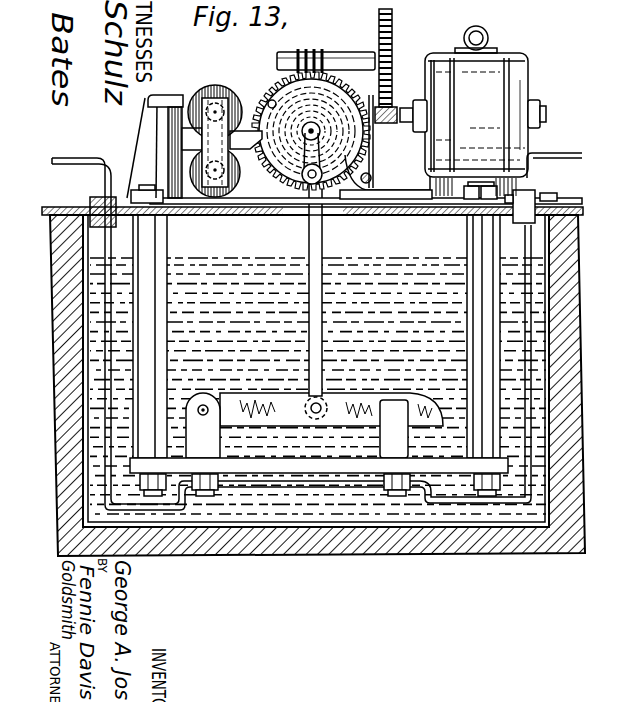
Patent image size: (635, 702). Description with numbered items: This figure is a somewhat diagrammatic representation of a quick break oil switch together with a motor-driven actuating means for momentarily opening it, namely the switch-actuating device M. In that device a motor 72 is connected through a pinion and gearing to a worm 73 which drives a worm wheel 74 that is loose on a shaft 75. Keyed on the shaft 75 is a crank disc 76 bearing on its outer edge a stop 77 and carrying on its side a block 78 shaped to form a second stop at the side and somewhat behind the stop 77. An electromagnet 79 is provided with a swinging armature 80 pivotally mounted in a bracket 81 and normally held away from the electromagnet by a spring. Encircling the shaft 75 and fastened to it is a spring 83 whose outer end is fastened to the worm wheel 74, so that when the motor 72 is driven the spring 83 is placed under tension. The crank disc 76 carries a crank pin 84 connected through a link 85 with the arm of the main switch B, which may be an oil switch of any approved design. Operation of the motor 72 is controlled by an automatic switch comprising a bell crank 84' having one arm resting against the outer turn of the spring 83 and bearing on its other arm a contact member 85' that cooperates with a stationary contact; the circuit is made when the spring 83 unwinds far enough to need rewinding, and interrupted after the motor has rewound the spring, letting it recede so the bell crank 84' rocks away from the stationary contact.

The motor 72 is at (492, 84).
The worm 73 is at (301, 53).
The worm wheel 74 is at (267, 100).
The shaft 75 is at (284, 178).
The crank disc 76 is at (314, 134).
The stop 77 is at (268, 103).
The block 78 is at (285, 112).
The electromagnet 79 is at (214, 86).
The swinging armature 80 is at (221, 139).
The bracket 81 is at (143, 146).
The spring 83 is at (329, 90).
The crank pin 84 is at (304, 191).
The bell crank 84' is at (395, 142).
The link 85 is at (335, 290).
The contact member 85' is at (386, 177).
The switch-actuating device M is at (169, 129).
The main switch B is at (314, 425).